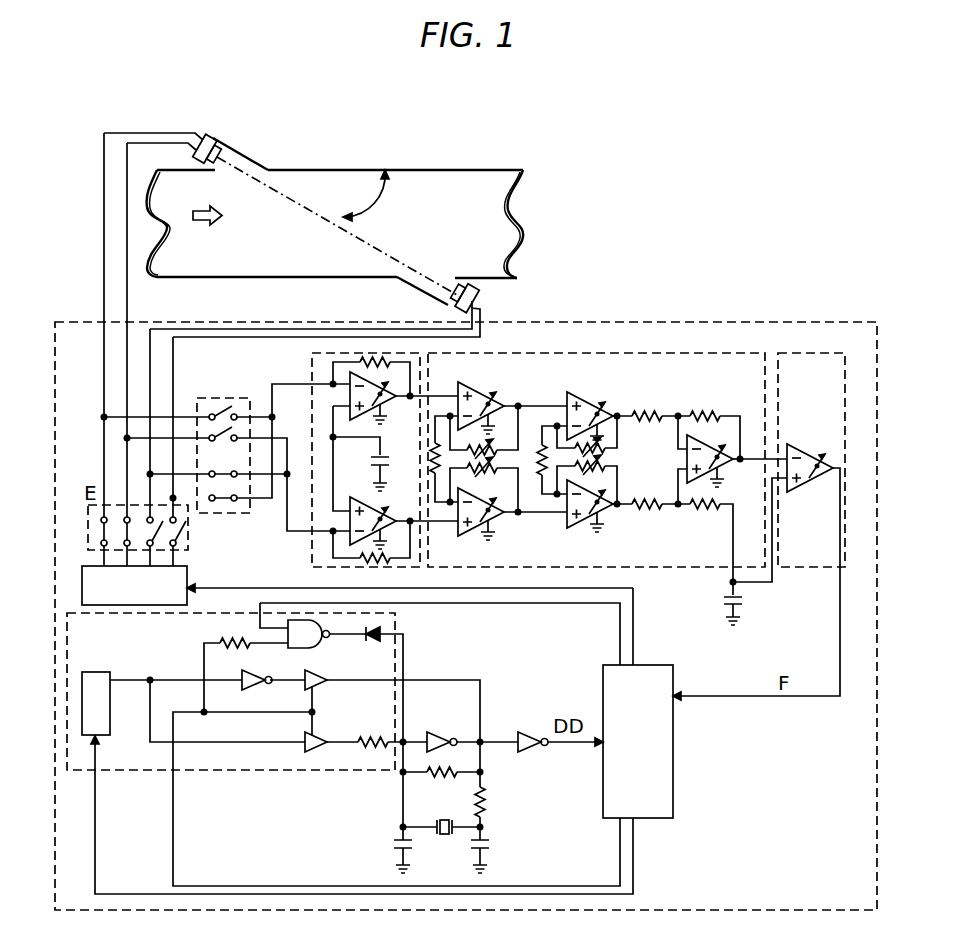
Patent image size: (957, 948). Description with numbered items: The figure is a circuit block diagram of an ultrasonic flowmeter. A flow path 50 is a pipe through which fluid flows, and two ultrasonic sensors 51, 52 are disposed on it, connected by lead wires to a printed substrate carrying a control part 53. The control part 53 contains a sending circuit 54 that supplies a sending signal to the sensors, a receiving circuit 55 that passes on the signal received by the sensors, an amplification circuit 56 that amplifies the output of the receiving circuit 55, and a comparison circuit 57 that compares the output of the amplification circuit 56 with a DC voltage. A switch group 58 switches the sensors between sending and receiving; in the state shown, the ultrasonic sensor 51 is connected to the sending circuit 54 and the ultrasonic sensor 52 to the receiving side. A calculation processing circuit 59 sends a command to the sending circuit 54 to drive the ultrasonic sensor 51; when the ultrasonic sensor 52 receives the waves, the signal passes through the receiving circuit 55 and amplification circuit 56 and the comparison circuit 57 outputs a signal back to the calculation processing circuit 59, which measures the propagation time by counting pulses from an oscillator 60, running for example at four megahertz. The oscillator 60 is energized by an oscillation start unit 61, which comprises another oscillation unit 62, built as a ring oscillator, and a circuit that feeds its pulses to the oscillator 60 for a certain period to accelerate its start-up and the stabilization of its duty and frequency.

The flow path 50 is at (389, 170).
The ultrasonic sensor 51 is at (222, 138).
The ultrasonic sensor 52 is at (480, 295).
The control part 53 is at (650, 322).
The sending circuit 54 is at (188, 574).
The receiving circuit 55 is at (310, 377).
The amplification circuit 56 is at (645, 353).
The comparison circuit 57 is at (822, 353).
The switch group 58 is at (212, 513).
The calculation processing circuit 59 is at (673, 745).
The oscillator 60 is at (443, 835).
The oscillation start unit 61 is at (222, 770).
The another oscillation unit 62 is at (110, 735).